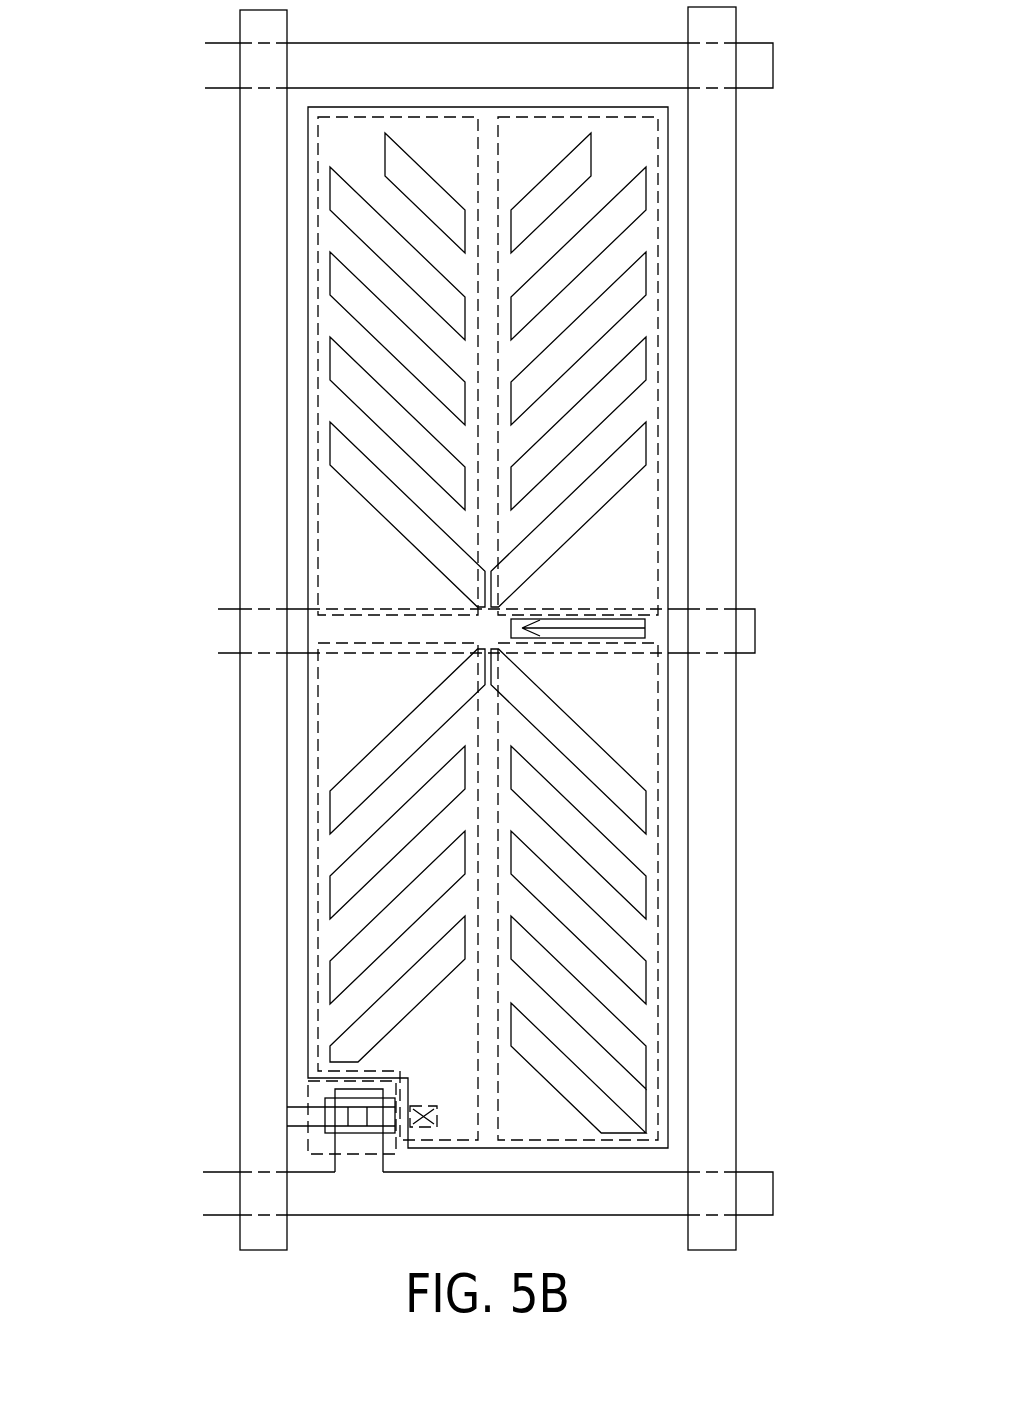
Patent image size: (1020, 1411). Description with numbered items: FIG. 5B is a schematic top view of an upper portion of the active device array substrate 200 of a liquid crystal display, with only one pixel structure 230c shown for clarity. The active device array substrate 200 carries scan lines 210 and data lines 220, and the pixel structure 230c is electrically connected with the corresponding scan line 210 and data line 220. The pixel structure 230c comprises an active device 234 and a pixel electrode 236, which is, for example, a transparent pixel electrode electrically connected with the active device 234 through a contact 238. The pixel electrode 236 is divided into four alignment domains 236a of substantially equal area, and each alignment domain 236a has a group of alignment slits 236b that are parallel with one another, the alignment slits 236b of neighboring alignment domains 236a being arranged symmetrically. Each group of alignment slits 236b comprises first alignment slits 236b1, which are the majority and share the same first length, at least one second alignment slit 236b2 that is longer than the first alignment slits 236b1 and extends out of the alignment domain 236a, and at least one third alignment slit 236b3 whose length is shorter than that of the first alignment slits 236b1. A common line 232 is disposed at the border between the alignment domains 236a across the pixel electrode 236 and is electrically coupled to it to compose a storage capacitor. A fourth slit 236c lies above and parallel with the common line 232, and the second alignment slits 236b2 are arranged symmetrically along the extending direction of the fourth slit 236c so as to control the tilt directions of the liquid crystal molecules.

The active device array substrate 200 is at (840, 1262).
The scan line 210 is at (215, 66).
The data line 220 is at (273, 26).
The pixel structure 230c is at (150, 727).
The common line 232 is at (232, 640).
The active device 234 is at (308, 1092).
The pixel electrode 236 is at (308, 852).
The alignment domain 236a is at (318, 548).
The alignment slits 236b is at (148, 118).
The first alignment slit 236b1 is at (395, 340).
The second alignment slit 236b2 is at (375, 487).
The third alignment slit 236b3 is at (425, 195).
The fourth slit 236c is at (645, 628).
The contact 238 is at (427, 1127).